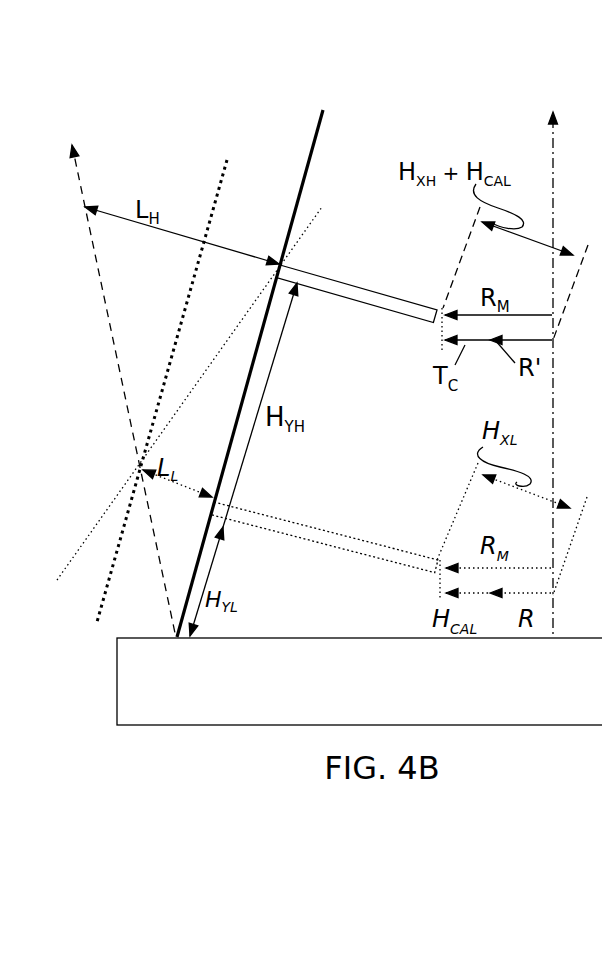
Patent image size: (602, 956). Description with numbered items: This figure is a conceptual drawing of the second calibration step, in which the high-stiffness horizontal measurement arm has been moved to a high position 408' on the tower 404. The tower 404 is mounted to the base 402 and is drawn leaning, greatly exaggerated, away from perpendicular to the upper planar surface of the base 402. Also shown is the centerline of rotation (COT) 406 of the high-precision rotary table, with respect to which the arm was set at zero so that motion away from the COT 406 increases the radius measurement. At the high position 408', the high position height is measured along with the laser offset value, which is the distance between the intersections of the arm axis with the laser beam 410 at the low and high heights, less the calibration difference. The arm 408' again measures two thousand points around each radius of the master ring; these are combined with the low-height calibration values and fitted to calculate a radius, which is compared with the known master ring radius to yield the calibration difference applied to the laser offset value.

The laser beam 410 is at (134, 348).
The tower 404 is at (271, 338).
The centerline of rotation (COT) 406 is at (548, 338).
The horizontal measurement arm at high position 408' is at (356, 260).
The base 402 is at (359, 681).